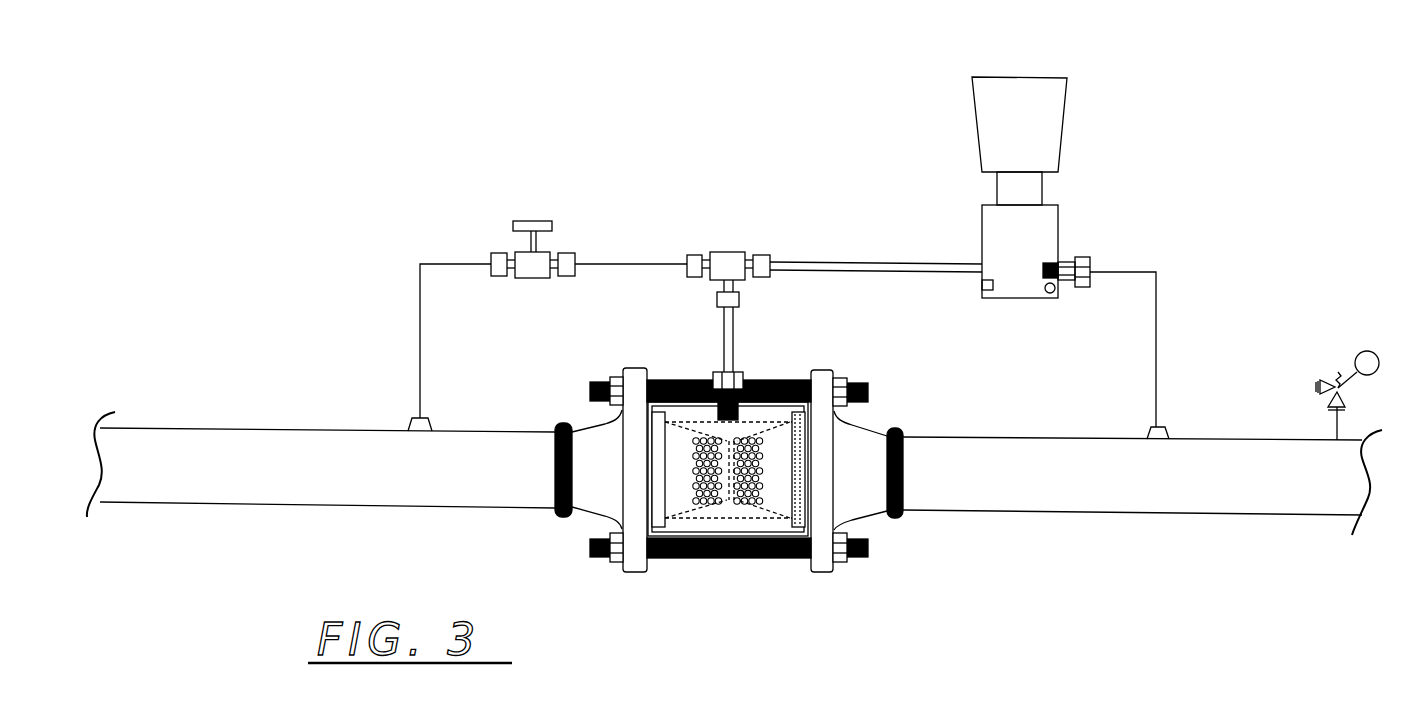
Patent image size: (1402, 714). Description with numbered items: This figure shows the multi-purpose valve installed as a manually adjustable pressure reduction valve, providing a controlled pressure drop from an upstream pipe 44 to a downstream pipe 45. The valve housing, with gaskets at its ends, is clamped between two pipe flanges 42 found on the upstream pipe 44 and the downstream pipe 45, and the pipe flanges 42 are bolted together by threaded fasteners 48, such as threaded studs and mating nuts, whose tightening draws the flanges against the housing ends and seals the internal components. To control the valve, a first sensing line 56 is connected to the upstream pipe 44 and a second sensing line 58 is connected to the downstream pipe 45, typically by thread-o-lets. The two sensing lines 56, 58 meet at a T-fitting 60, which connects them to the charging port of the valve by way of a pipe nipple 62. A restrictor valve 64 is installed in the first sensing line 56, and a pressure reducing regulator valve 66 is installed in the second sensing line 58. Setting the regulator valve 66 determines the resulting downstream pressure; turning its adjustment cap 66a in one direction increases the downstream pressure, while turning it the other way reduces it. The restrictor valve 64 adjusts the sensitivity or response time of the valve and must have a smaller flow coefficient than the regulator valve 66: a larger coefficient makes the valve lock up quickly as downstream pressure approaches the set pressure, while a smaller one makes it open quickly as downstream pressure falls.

The pipe flange 42 is at (823, 440).
The upstream pipe 44 is at (167, 443).
The downstream pipe 45 is at (1113, 495).
The threaded fastener 48 is at (770, 382).
The first sensing line 56 is at (419, 312).
The second sensing line 58 is at (1160, 328).
The T-fitting 60 is at (720, 262).
The pipe nipple 62 is at (730, 342).
The restrictor valve 64 is at (540, 268).
The pressure reducing regulator valve 66 is at (1047, 230).
The adjustment cap 66a is at (1053, 123).